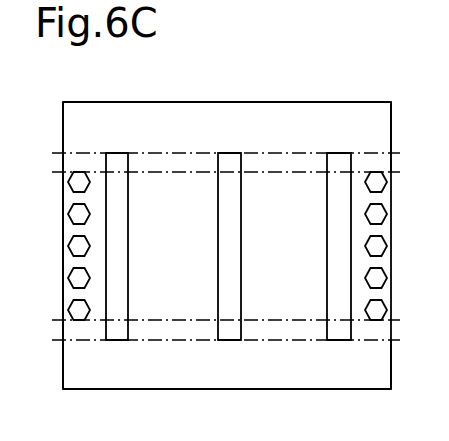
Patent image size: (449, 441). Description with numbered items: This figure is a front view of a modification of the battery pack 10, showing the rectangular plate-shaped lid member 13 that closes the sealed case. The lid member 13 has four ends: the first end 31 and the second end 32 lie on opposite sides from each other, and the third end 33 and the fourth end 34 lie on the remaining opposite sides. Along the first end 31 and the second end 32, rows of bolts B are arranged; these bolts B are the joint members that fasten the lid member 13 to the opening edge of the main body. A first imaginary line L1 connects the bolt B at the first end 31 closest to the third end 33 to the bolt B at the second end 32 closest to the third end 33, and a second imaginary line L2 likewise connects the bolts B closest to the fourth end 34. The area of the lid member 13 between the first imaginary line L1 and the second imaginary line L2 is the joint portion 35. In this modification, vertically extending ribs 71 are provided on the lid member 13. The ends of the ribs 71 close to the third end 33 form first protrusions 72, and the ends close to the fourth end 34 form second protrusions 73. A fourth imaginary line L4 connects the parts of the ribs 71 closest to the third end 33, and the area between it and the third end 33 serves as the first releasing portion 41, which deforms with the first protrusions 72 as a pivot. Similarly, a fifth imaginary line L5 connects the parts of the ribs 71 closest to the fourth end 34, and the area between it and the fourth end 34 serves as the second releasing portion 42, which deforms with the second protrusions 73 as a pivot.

The battery pack 10 is at (388, 72).
The lid member 13 is at (80, 113).
The first end 31 is at (63, 232).
The second end 32 is at (393, 154).
The third end 33 is at (163, 102).
The fourth end 34 is at (143, 390).
The joint portion 35 is at (393, 172).
The first releasing portion 41 is at (393, 103).
The second releasing portion 42 is at (393, 341).
The ribs 71 is at (120, 276).
The first protrusions 72 is at (116, 157).
The second protrusions 73 is at (118, 334).
The bolts B is at (90, 182).
The first imaginary line L1 is at (184, 173).
The second imaginary line L2 is at (263, 318).
The fourth imaginary line L4 is at (250, 152).
The fifth imaginary line L5 is at (250, 345).